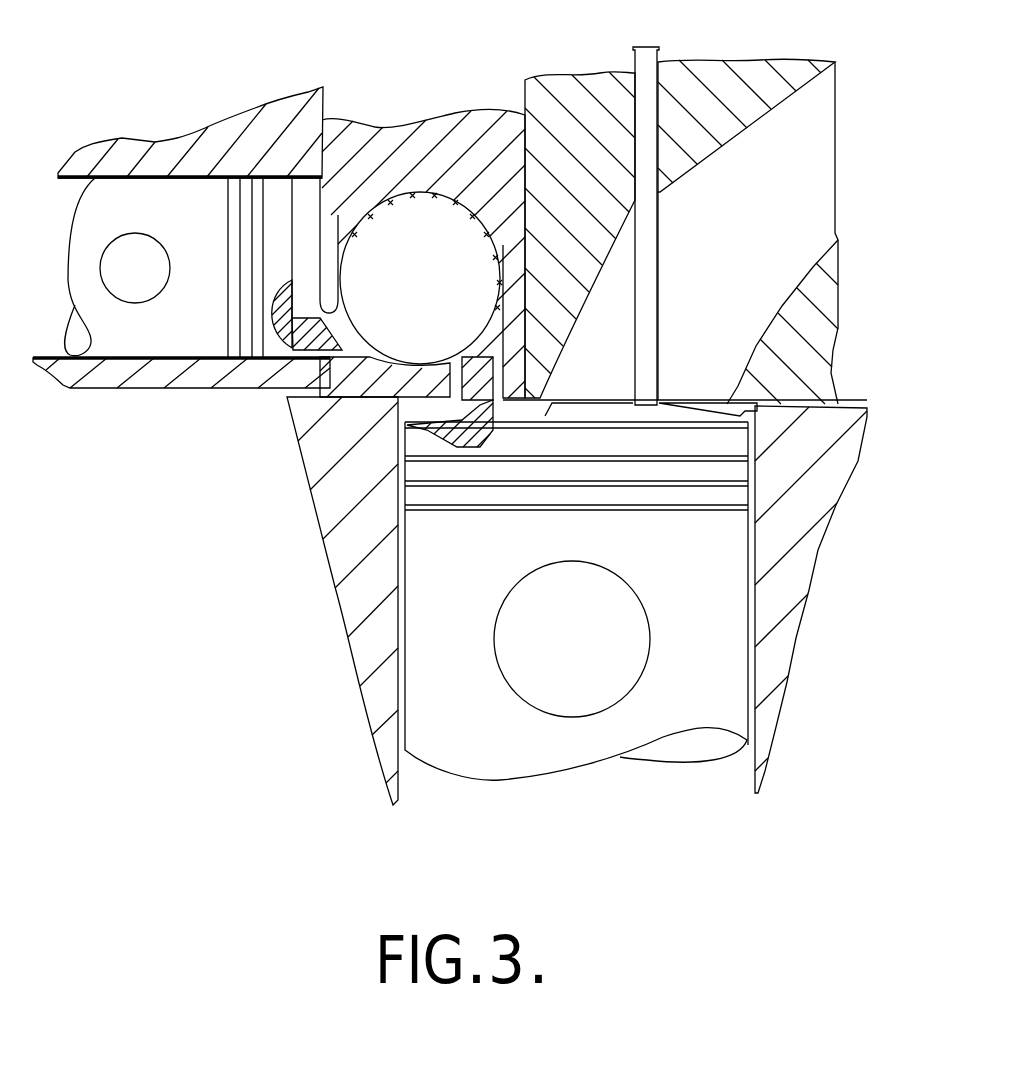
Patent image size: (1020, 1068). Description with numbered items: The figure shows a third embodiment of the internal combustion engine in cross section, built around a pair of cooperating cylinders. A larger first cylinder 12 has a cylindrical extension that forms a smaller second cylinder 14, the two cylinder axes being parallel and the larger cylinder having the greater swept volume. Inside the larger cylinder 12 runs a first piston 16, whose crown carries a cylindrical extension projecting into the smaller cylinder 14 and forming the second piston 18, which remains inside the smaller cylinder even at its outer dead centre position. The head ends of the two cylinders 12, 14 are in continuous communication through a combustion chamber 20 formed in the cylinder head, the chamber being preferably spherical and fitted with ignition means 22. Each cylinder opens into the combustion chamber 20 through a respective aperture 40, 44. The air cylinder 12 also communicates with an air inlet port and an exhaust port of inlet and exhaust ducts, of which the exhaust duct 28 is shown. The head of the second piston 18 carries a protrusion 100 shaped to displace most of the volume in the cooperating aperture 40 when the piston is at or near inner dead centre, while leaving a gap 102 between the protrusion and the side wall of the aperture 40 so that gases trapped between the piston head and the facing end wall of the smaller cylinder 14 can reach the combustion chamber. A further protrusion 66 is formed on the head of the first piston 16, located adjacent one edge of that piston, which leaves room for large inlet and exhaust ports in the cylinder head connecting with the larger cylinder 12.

The first cylinder 12 is at (747, 411).
The second cylinder 14 is at (305, 212).
The first piston 16 is at (697, 442).
The second piston 18 is at (278, 212).
The combustion chamber 20 is at (419, 226).
The ignition means 22 is at (487, 243).
The exhaust duct 28 is at (797, 182).
The aperture 40 is at (343, 342).
The aperture 44 is at (397, 398).
The protrusion 66 is at (407, 428).
The protrusion 100 is at (290, 387).
The gap 102 is at (339, 228).